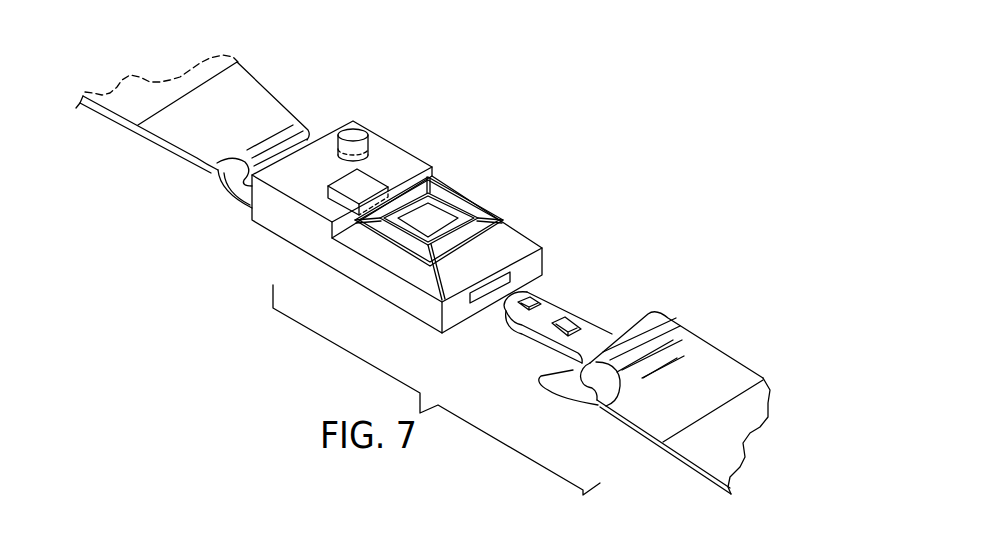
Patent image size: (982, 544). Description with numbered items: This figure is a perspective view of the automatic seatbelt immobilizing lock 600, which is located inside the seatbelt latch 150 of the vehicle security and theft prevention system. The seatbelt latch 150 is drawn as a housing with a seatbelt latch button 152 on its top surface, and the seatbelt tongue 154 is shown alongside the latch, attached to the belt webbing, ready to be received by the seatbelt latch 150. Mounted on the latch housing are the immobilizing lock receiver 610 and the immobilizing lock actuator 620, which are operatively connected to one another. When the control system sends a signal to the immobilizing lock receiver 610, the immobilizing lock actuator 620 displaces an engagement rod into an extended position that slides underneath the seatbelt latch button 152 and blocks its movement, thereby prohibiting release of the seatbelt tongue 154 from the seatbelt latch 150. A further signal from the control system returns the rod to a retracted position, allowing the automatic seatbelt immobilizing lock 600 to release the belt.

The automatic seatbelt immobilizing lock 600 is at (478, 67).
The seatbelt latch 150 is at (510, 226).
The seatbelt latch button 152 is at (428, 215).
The seatbelt tongue 154 is at (556, 311).
The immobilizing lock receiver 610 is at (348, 133).
The immobilizing lock actuator 620 is at (371, 177).